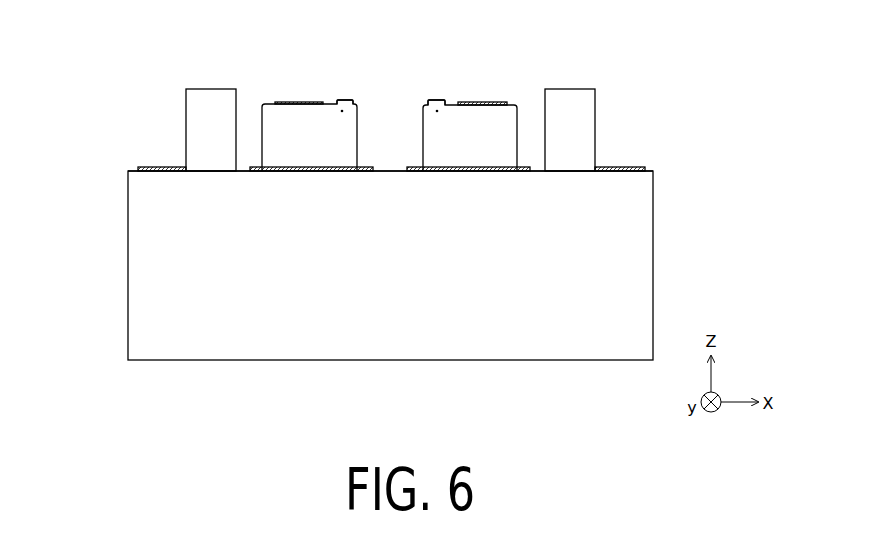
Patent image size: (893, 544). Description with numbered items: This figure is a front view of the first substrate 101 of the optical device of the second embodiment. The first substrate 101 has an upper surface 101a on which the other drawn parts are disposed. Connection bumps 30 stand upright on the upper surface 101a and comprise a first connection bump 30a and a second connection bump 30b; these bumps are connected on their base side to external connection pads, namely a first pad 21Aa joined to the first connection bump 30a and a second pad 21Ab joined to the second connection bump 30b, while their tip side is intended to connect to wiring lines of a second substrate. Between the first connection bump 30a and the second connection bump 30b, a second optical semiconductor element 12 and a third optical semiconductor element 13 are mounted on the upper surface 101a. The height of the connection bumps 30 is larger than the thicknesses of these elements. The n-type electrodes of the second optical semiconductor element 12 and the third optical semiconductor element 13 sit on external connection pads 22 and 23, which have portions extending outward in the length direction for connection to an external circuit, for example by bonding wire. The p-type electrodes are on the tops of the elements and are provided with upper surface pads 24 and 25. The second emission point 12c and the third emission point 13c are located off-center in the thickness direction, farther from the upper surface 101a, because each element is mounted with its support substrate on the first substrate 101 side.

The first substrate 101 is at (392, 338).
The upper surface 101a is at (143, 170).
The second pad 21Ab is at (163, 168).
The first pad 21Aa is at (617, 172).
The external connection pad 22 is at (305, 173).
The external connection pad 23 is at (468, 173).
The connection bumps 30 is at (415, 100).
The first connection bump 30a is at (568, 103).
The second connection bump 30b is at (203, 105).
The second optical semiconductor element 12 is at (323, 102).
The second emission point 12c is at (343, 100).
The upper surface pad 24 is at (292, 101).
The third optical semiconductor element 13 is at (453, 107).
The third emission point 13c is at (425, 108).
The upper surface pad 25 is at (483, 102).